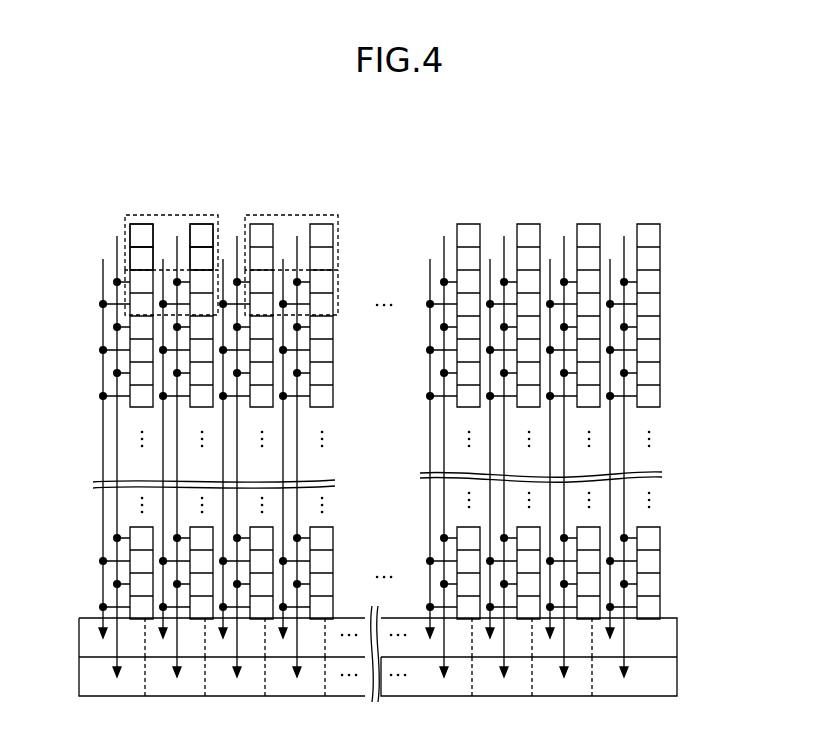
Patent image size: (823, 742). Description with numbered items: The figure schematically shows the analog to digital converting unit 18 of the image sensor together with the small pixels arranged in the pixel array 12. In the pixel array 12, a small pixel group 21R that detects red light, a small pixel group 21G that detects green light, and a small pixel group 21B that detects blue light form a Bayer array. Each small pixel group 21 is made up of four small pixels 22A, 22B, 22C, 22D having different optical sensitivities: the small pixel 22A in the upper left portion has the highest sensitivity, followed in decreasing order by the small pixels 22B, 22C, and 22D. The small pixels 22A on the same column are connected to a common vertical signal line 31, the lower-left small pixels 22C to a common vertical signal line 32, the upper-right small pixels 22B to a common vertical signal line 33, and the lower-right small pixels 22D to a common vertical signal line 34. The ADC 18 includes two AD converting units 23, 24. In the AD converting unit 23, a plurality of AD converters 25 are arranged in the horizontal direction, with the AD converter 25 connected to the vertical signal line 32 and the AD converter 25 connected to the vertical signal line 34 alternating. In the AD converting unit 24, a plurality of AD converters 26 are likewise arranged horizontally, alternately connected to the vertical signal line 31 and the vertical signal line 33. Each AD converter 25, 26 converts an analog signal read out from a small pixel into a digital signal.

The pixel array 12 is at (404, 406).
The analog to digital converting unit 18 is at (404, 654).
The small pixel group 21 is at (217, 364).
The small pixel group which detects green light 21G is at (340, 272).
The small pixel group which detects red light 21R is at (340, 218).
The small pixel group which detects blue light 21B is at (127, 310).
The small pixel 22A is at (143, 230).
The small pixel 22B is at (208, 237).
The small pixel 22C is at (150, 260).
The small pixel 22D is at (238, 227).
The AD converting unit 23 is at (678, 638).
The AD converting unit 24 is at (678, 678).
The AD converter 25 is at (79, 638).
The AD converter 26 is at (79, 678).
The vertical signal line 31 is at (118, 242).
The vertical signal line 32 is at (105, 260).
The vertical signal line 33 is at (166, 417).
The vertical signal line 34 is at (163, 457).